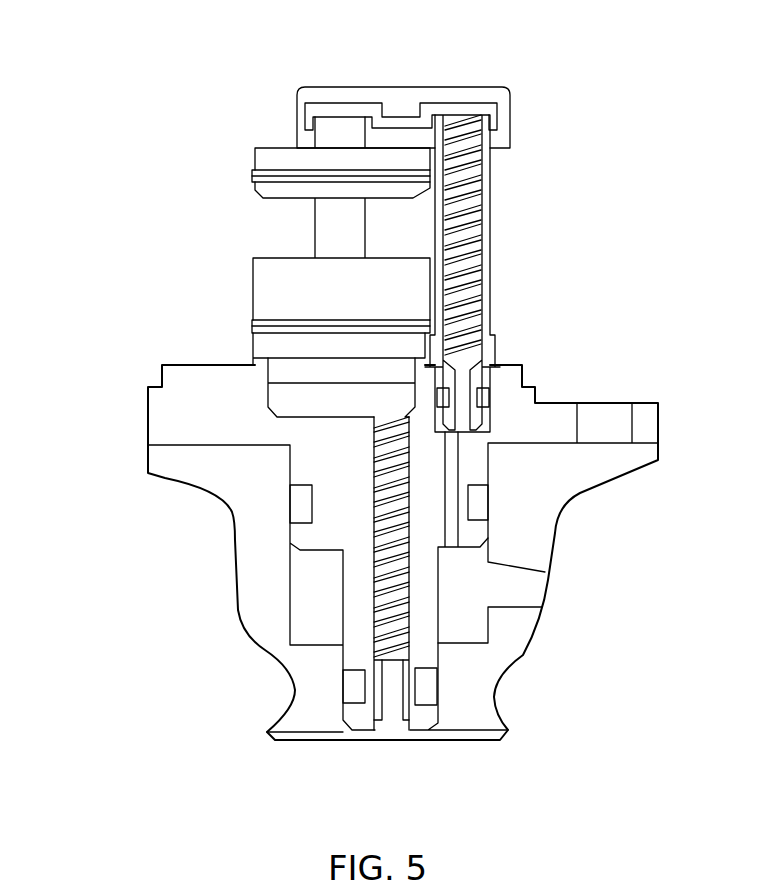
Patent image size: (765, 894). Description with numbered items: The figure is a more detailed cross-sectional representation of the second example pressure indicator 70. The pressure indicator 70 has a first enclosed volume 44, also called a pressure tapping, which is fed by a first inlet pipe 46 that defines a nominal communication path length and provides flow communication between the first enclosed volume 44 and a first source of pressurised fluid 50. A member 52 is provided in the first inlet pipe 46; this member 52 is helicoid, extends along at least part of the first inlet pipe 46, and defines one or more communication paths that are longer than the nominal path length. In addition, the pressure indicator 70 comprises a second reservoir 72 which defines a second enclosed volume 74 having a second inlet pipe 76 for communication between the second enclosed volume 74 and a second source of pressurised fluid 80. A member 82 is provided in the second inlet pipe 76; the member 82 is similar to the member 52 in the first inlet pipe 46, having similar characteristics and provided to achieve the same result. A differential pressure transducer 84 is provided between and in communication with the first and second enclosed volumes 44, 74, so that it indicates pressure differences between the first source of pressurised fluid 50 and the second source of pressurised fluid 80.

The pressure indicator 70 is at (135, 135).
The second reservoir 72 is at (403, 90).
The second enclosed volume 74 is at (377, 120).
The second inlet pipe 76 is at (488, 175).
The member 82 is at (480, 233).
The differential pressure transducer 84 is at (265, 272).
The first enclosed volume 44 is at (287, 400).
The first inlet pipe 46 is at (373, 478).
The member 52 is at (373, 592).
The second source of pressurised fluid 80 is at (532, 590).
The first source of pressurised fluid 50 is at (390, 720).